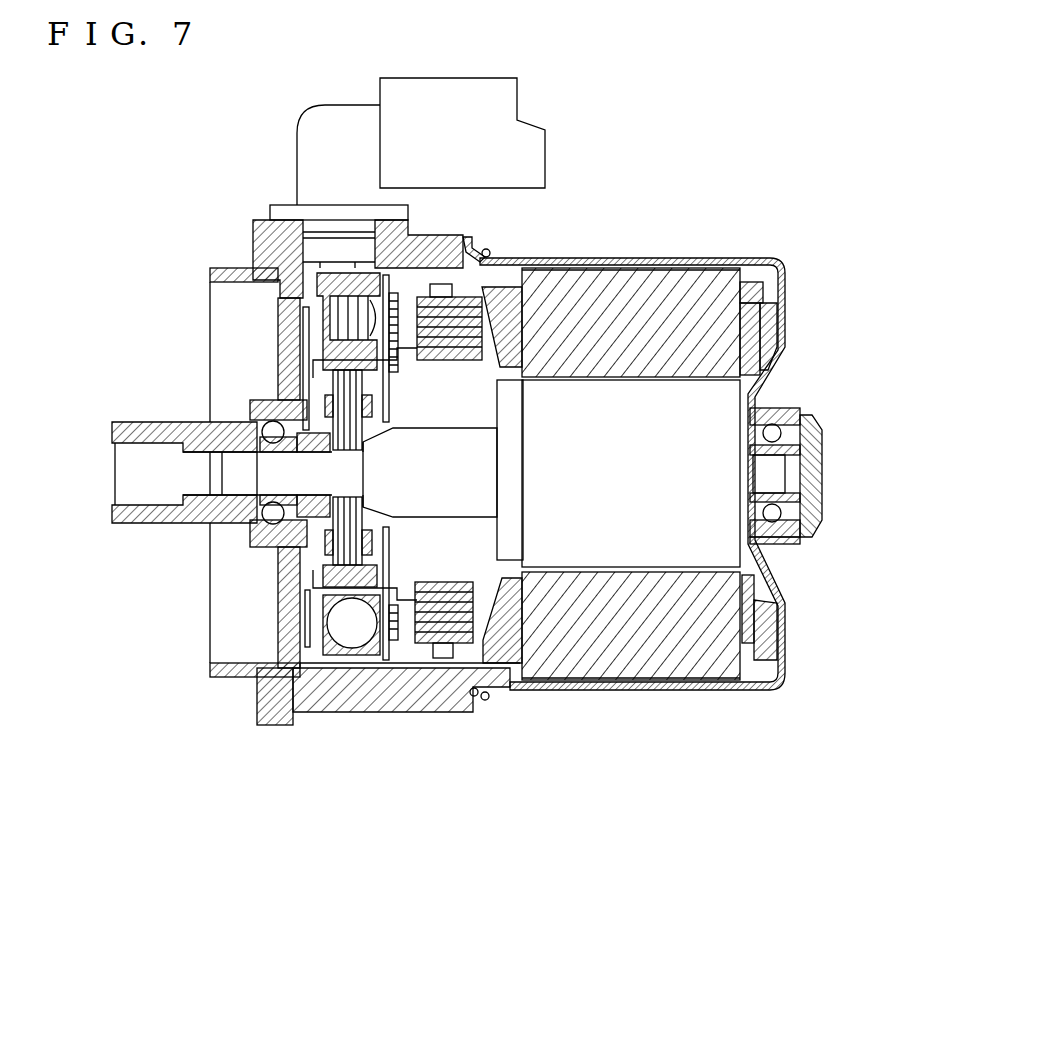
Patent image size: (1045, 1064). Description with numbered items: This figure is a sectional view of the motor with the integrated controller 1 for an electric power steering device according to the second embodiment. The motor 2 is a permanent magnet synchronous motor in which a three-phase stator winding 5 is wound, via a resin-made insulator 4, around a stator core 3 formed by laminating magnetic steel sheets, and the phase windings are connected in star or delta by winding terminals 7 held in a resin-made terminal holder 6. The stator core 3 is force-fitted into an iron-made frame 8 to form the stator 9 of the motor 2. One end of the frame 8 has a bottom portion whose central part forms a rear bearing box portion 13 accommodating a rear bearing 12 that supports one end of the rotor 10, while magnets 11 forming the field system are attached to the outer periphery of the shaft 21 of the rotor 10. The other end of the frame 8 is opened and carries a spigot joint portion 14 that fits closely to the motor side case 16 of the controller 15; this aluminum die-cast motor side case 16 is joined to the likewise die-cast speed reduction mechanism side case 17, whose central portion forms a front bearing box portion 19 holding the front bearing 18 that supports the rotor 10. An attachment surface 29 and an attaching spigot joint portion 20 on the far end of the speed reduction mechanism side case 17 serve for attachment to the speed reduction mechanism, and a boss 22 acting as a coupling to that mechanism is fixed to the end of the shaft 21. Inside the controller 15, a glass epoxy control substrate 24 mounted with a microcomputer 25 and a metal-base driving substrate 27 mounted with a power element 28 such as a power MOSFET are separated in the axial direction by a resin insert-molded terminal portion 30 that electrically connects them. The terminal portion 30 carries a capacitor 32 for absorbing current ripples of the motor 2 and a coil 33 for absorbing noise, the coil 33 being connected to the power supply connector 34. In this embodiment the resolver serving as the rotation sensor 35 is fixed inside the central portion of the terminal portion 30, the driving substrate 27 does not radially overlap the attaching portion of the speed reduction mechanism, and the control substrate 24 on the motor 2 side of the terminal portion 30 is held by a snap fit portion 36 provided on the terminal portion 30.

The motor unit 1 is at (527, 810).
The motor 2 is at (642, 780).
The stator core 3 is at (697, 690).
The insulator 4 is at (753, 283).
The stator winding 5 is at (768, 330).
The terminal holder 6 is at (452, 305).
The winding terminals 7 is at (413, 365).
The frame 8 is at (650, 678).
The stator 9 is at (598, 665).
The rotor 10 is at (488, 545).
The magnets 11 is at (713, 407).
The rear bearing 12 is at (795, 417).
The rear bearing box portion 13 is at (795, 530).
The spigot joint portion 14 is at (486, 698).
The controller 15 is at (363, 803).
The motor side case 16 is at (452, 714).
The speed reduction mechanism side case 17 is at (275, 727).
The front bearing 18 is at (258, 418).
The front bearing box portion 19 is at (258, 528).
The attaching spigot joint portion 20 is at (230, 672).
The shaft 21 is at (465, 423).
The boss 22 is at (123, 525).
The control substrate 24 is at (393, 400).
The microcomputer 25 is at (398, 370).
The driving substrate 27 is at (305, 350).
The power element 28 is at (305, 325).
The attachment surface 29 is at (253, 262).
The terminal portion 30 is at (375, 668).
The capacitor 32 is at (355, 662).
The coil 33 is at (337, 307).
The power supply connector 34 is at (421, 78).
The rotation sensor 35 is at (387, 424).
The snap fit portion 36 is at (422, 236).